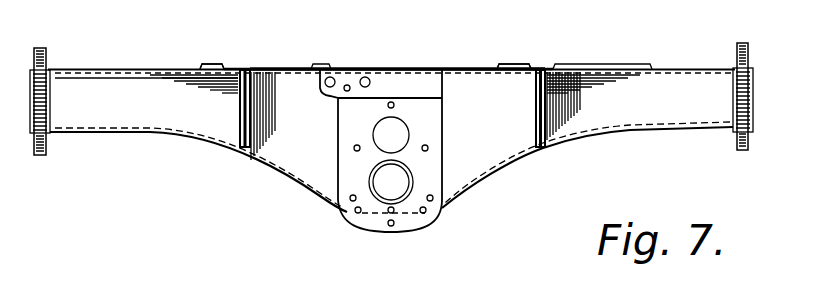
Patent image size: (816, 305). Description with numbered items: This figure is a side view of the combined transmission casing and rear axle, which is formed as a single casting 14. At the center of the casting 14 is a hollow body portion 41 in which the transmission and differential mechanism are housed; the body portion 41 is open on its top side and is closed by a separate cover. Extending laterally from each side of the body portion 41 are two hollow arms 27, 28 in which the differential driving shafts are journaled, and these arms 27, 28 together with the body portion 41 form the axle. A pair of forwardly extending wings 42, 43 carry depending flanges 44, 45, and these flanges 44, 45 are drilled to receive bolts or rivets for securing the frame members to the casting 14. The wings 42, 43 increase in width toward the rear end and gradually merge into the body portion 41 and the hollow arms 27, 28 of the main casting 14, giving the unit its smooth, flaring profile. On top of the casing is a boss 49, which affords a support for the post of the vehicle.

The casting 14 is at (291, 64).
The hollow arm 27 is at (668, 120).
The hollow arm 28 is at (135, 120).
The hollow body portion 41 is at (308, 173).
The wing 42 is at (543, 67).
The wing 43 is at (200, 65).
The depending flange 44 is at (550, 145).
The depending flange 45 is at (240, 148).
The boss 49 is at (226, 65).